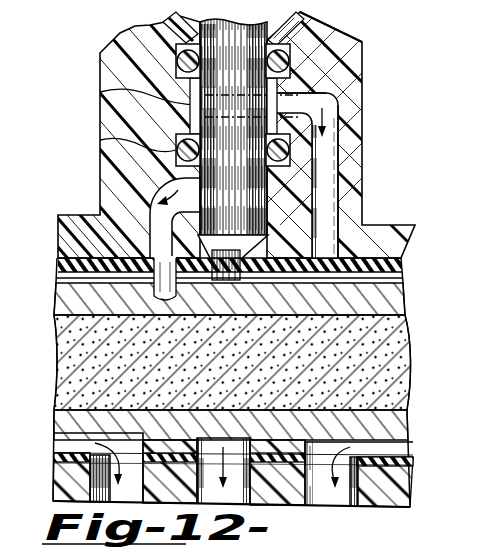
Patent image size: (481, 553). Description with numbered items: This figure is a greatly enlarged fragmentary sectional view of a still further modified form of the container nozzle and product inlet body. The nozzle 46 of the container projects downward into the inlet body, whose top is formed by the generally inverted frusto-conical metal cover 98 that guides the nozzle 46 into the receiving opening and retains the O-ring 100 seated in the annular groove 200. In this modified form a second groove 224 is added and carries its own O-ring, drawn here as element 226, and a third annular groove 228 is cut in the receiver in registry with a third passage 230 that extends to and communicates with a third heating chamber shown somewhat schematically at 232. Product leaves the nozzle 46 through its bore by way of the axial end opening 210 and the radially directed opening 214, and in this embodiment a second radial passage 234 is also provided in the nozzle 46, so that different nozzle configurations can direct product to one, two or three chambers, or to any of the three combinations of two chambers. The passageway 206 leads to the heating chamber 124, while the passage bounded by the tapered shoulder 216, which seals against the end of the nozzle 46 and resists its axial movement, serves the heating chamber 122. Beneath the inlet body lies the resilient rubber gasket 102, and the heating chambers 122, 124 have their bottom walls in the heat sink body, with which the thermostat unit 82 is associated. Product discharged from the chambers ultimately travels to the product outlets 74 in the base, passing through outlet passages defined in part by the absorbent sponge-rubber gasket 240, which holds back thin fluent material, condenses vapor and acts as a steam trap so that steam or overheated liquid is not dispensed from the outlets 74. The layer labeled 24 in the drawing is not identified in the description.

The gasket layer 24 is at (58, 265).
The nozzle 46 is at (256, 32).
The product outlet 74 is at (100, 493).
The thermostat unit 82 is at (76, 370).
The cover 98 is at (190, 22).
The O-ring 100 is at (105, 142).
The upper gasket 102 is at (398, 269).
The heating chamber 122 is at (204, 306).
The heating chamber 124 is at (62, 284).
The annular groove 200 is at (100, 96).
The passageway 206 is at (105, 212).
The axial end opening 210 is at (242, 274).
The radially directed opening 214 is at (338, 212).
The tapered shoulder 216 is at (182, 276).
The second groove 224 is at (118, 44).
The right housing block 226 is at (355, 38).
The third annular groove 228 is at (340, 96).
The third passage 230 is at (335, 160).
The third heating chamber 232 is at (406, 283).
The second radial passage 234 is at (340, 72).
The absorbent gasket 240 is at (52, 462).